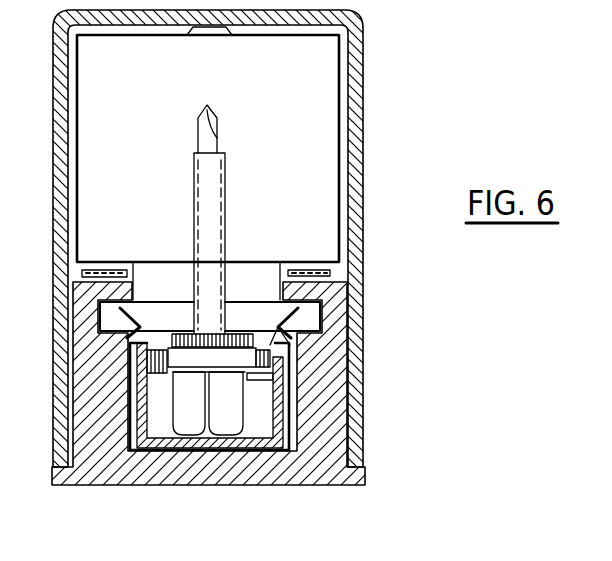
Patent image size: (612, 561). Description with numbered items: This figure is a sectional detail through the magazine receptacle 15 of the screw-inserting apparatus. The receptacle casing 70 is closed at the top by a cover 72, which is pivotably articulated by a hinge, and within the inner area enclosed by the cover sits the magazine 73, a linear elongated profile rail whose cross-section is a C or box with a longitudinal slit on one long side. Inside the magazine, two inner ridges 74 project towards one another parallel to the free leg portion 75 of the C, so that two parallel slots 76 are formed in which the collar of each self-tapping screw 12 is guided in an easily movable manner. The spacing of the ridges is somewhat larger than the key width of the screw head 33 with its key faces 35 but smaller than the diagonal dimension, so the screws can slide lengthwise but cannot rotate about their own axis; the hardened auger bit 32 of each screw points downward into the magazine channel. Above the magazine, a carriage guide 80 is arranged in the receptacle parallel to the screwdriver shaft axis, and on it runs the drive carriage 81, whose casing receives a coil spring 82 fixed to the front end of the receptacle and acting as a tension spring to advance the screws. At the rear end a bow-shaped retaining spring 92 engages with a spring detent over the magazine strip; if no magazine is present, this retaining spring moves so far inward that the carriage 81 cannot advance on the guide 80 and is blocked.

The magazine receptacle 15 is at (240, 238).
The cover 72 is at (357, 128).
The drive carriage 81 is at (290, 98).
The self-tapping screw 12 is at (230, 230).
The coil spring 82 is at (302, 265).
The carriage guide 80 is at (256, 295).
The retaining spring 92 is at (325, 317).
The free leg portion 75 is at (152, 342).
The slots 76 is at (140, 358).
The inner ridges 74 is at (130, 380).
The auger bit 32 is at (262, 351).
The magazine 73 is at (289, 392).
The key faces 35 is at (168, 412).
The screw head 33 is at (233, 420).
The receptacle casing 70 is at (187, 406).